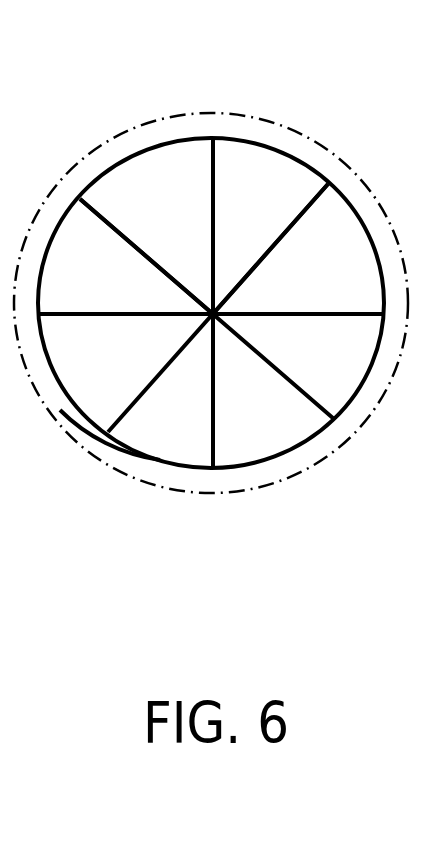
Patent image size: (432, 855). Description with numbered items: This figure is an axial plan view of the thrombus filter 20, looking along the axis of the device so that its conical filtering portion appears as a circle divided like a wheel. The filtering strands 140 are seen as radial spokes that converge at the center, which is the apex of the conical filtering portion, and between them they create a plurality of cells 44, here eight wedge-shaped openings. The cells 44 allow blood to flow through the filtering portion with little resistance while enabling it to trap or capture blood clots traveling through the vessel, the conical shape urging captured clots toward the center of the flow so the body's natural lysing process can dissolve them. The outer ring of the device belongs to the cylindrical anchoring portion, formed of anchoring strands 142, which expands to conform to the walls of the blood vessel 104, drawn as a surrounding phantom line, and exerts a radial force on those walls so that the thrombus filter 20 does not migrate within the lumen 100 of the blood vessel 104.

The thrombus filter 20 is at (177, 466).
The cell 44 is at (253, 210).
The lumen 100 is at (168, 208).
The blood vessel 104 is at (289, 501).
The filtering strand 140 is at (215, 215).
The anchoring strand 142 is at (140, 452).